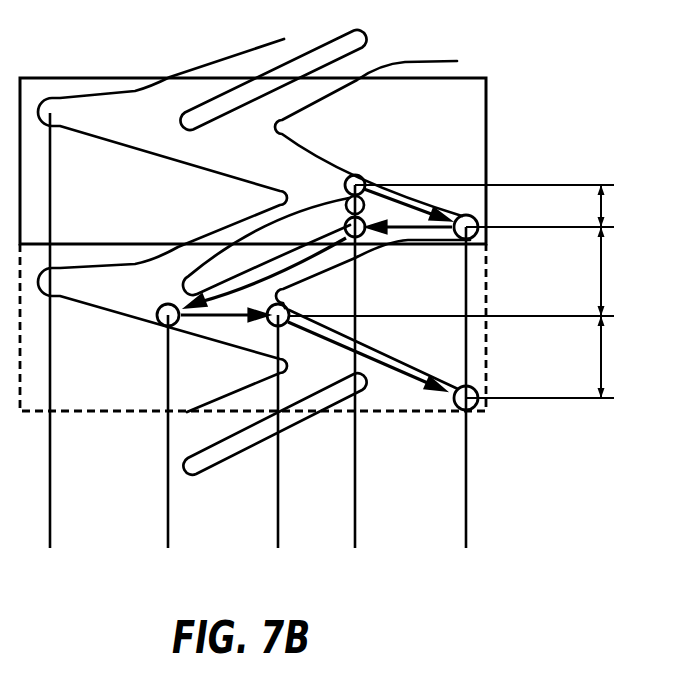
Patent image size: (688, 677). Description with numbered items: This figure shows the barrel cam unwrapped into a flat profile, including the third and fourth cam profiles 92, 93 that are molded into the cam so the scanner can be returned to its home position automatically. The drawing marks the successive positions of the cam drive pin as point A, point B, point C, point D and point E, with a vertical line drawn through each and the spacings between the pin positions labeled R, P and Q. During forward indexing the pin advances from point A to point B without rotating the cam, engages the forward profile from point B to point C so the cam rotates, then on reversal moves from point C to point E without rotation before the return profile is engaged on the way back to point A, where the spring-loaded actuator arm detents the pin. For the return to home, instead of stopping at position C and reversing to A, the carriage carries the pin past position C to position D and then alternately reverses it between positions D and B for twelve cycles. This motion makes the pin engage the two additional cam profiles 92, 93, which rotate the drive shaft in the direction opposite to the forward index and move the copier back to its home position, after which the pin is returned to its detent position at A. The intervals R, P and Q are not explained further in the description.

The cam profile 92 is at (292, 262).
The cam profile 93 is at (400, 358).
The point A is at (48, 345).
The point B is at (168, 440).
The point C is at (355, 376).
The position D is at (466, 396).
The point E is at (278, 440).
The feed distance R is at (495, 206).
The feed distance P is at (462, 271).
The feed distance Q is at (551, 357).